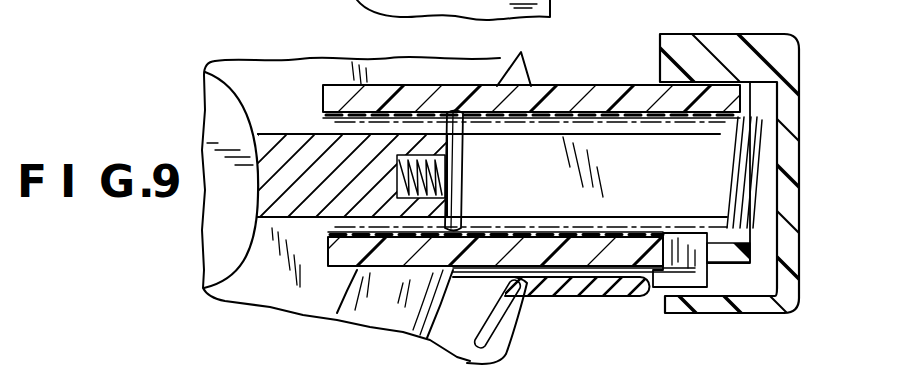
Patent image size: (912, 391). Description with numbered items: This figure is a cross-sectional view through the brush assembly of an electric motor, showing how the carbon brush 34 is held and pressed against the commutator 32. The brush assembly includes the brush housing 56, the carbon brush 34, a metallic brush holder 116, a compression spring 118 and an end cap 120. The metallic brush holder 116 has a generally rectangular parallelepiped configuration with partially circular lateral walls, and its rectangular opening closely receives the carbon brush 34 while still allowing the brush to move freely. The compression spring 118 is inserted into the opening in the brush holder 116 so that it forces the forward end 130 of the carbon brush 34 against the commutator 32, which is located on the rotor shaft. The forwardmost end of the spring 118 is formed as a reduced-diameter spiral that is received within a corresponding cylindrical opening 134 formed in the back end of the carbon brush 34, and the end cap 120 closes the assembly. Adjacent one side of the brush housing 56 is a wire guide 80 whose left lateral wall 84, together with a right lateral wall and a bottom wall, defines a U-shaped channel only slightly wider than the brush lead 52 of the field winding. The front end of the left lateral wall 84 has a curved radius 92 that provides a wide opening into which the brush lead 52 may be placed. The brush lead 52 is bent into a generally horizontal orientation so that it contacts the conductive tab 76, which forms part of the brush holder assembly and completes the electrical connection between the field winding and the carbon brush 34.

The commutator 32 is at (220, 270).
The carbon brush 34 is at (290, 133).
The brush lead 52 is at (655, 258).
The brush housing 56 is at (597, 85).
The tab 76 is at (683, 282).
The wire guide 80 is at (620, 306).
The left lateral wall 84 is at (587, 283).
The curved radius 92 is at (520, 318).
The metallic brush holder 116 is at (535, 112).
The compression spring 118 is at (465, 188).
The end cap 120 is at (740, 0).
The forward end 130 is at (232, 100).
The cylindrical opening 134 is at (407, 155).